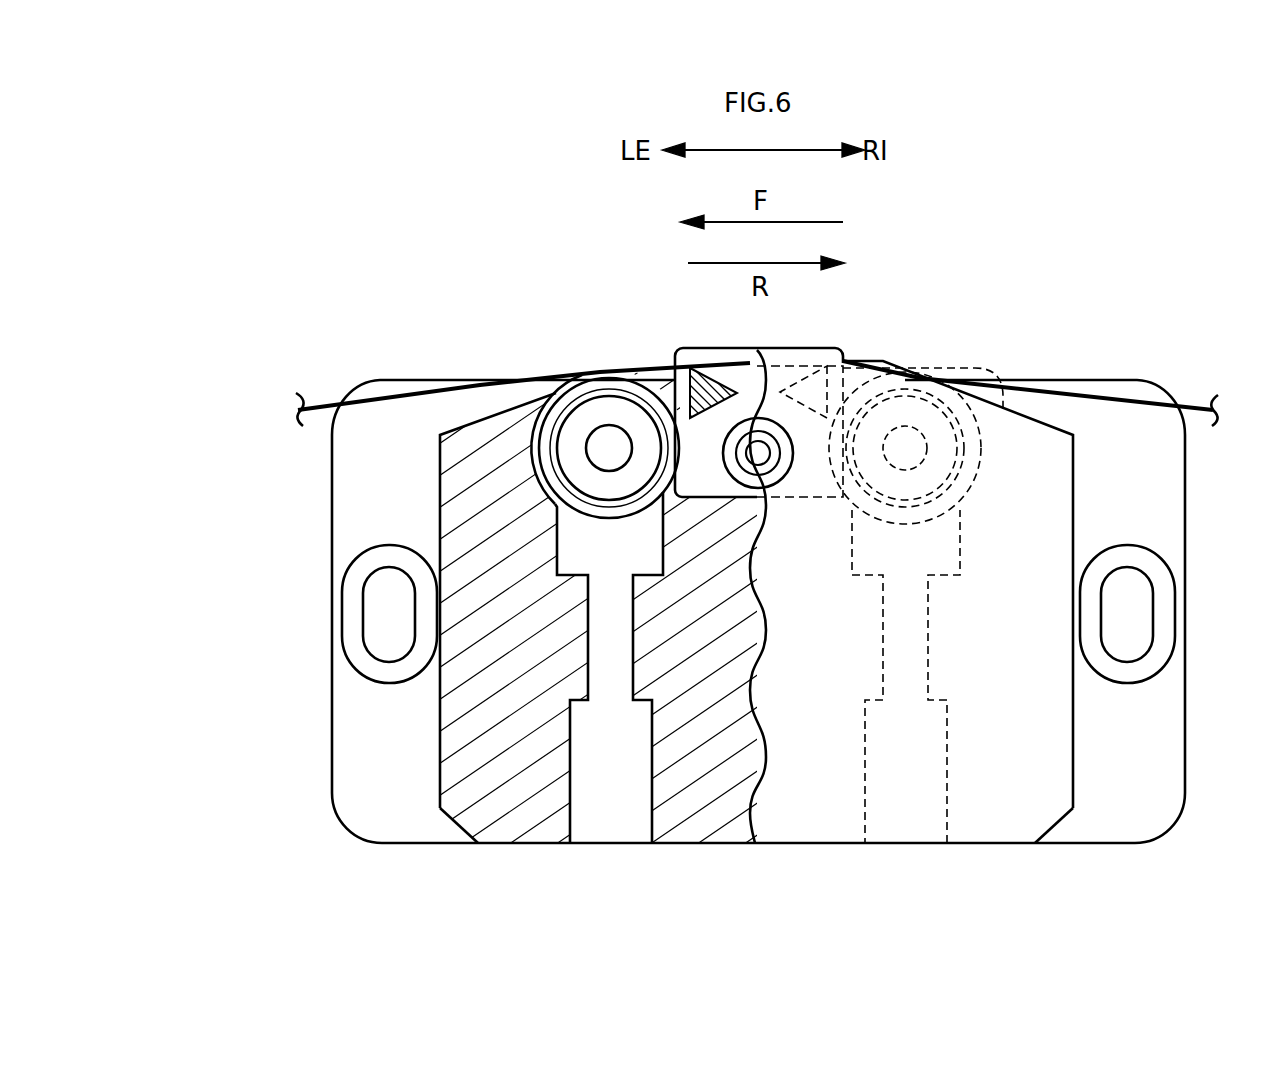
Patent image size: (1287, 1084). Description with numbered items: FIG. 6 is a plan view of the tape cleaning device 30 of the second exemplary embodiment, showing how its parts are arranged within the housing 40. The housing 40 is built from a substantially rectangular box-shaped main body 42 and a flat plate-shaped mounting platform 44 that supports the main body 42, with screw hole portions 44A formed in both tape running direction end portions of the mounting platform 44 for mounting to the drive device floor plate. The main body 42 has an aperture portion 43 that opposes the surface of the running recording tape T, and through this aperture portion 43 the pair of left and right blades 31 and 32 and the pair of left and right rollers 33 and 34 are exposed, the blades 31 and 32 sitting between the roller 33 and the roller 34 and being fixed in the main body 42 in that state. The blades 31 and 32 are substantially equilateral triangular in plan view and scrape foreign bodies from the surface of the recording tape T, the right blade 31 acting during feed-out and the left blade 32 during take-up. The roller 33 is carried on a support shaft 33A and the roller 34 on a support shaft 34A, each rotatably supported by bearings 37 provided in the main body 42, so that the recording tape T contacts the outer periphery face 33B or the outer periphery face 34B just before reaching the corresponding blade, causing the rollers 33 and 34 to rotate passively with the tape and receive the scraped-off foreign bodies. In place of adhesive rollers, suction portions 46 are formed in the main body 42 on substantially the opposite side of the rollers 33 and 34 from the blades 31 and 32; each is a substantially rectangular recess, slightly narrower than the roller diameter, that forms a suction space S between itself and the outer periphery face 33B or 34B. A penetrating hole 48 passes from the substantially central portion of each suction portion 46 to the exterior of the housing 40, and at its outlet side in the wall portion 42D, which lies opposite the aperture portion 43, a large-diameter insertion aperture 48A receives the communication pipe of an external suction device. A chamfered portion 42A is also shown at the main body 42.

The tape cleaning device 30 is at (1185, 846).
The blade 31 is at (847, 372).
The blade 32 is at (683, 383).
The roller 33 is at (985, 452).
The support shaft 33A is at (913, 437).
The outer periphery face 33B is at (1002, 410).
The roller 34 is at (572, 465).
The support shaft 34A is at (604, 447).
The outer periphery face 34B is at (533, 450).
The bearings 37 is at (560, 490).
The housing 40 is at (1190, 525).
The main body 42 is at (1077, 776).
The chamfered portion 42A is at (1052, 808).
The wall portion 42D is at (702, 843).
The aperture portion 43 is at (550, 396).
The mounting platform 44 is at (355, 773).
The screw hole portions 44A is at (365, 604).
The suction portions 46 is at (563, 540).
The penetrating hole 48 is at (590, 663).
The insertion aperture 48A is at (643, 843).
The suction spaces S is at (878, 548).
The recording tape T is at (1194, 402).